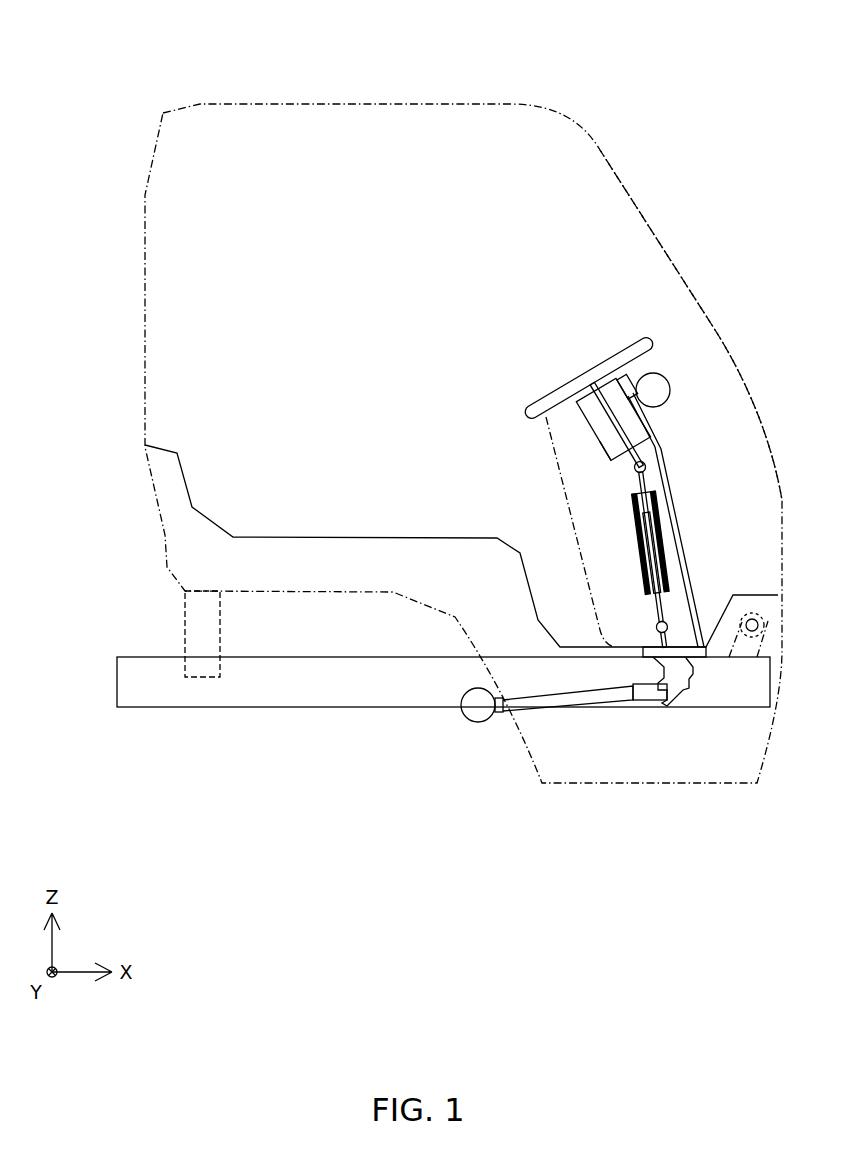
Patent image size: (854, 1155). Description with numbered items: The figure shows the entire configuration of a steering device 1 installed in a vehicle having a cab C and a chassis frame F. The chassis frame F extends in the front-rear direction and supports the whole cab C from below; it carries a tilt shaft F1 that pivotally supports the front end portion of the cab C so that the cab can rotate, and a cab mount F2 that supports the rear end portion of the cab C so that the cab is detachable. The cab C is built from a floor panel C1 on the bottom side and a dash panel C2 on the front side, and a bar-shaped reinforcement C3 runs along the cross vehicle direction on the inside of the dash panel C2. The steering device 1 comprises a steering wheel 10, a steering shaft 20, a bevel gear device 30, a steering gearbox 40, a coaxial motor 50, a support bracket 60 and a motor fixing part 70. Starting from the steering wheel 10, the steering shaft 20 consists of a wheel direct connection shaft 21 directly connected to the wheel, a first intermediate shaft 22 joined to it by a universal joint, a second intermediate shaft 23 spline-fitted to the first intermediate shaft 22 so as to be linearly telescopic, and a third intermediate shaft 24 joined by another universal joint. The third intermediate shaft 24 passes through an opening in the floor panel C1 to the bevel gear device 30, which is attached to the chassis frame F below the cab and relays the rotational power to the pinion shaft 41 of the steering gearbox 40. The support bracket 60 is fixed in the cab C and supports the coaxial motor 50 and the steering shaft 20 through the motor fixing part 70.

The steering device 1 is at (506, 379).
The steering wheel 10 is at (640, 346).
The steering shaft 20 is at (566, 512).
The wheel direct connection shaft 21 is at (576, 403).
The first intermediate shaft 22 is at (641, 486).
The second intermediate shaft 23 is at (648, 597).
The third intermediate shaft 24 is at (657, 630).
The bevel gear device 30 is at (680, 690).
The steering gearbox 40 is at (475, 722).
The pinion shaft 41 is at (597, 700).
The coaxial motor 50 is at (608, 455).
The support bracket 60 is at (688, 553).
The motor fixing part 70 is at (668, 373).
The cab C is at (627, 73).
The floor panel C1 is at (378, 537).
The dash panel C2 is at (638, 208).
The reinforcement C3 is at (673, 390).
The chassis frame F is at (268, 708).
The tilt shaft F1 is at (767, 623).
The cab mount F2 is at (185, 620).